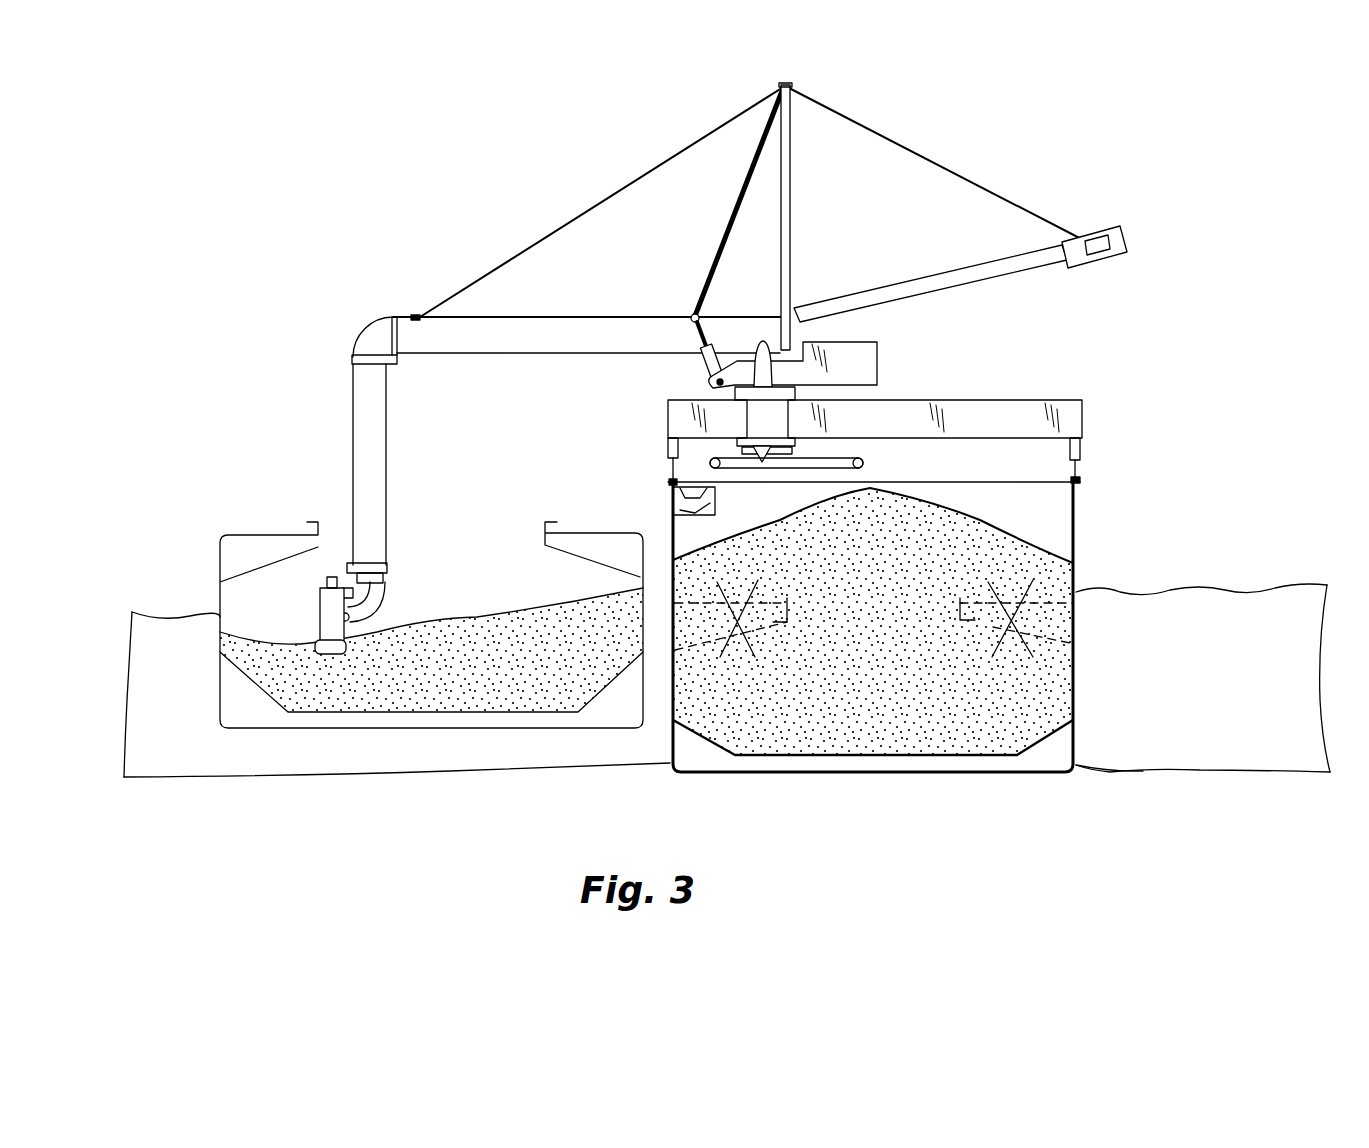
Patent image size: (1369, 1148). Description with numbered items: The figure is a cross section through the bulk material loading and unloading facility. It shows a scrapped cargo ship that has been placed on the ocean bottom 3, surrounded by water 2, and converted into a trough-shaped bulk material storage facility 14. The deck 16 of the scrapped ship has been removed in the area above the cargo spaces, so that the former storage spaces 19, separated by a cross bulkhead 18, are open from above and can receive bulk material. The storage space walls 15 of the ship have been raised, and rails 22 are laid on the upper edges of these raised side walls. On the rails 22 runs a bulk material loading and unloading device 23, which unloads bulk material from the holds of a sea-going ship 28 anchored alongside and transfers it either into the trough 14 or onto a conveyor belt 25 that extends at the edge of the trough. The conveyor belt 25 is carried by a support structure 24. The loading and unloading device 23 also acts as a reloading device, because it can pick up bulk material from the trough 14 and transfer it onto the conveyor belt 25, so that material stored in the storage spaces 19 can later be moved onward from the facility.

The water 2 is at (167, 699).
The ocean bottom 3 is at (1143, 770).
The trough-shaped bulk material storage facility 14 is at (853, 565).
The storage space walls 15 is at (1077, 530).
The deck of the scrapped cargo ship 16 is at (1076, 630).
The cross bulkhead 18 is at (1003, 515).
The storage spaces 19 is at (873, 700).
The rails 22 is at (1082, 478).
The bulk material loading and unloading device 23 is at (563, 340).
The support structure for the conveyor belt 24 is at (688, 518).
The conveyor belt 25 is at (671, 487).
The sea-going ship 28 is at (430, 599).